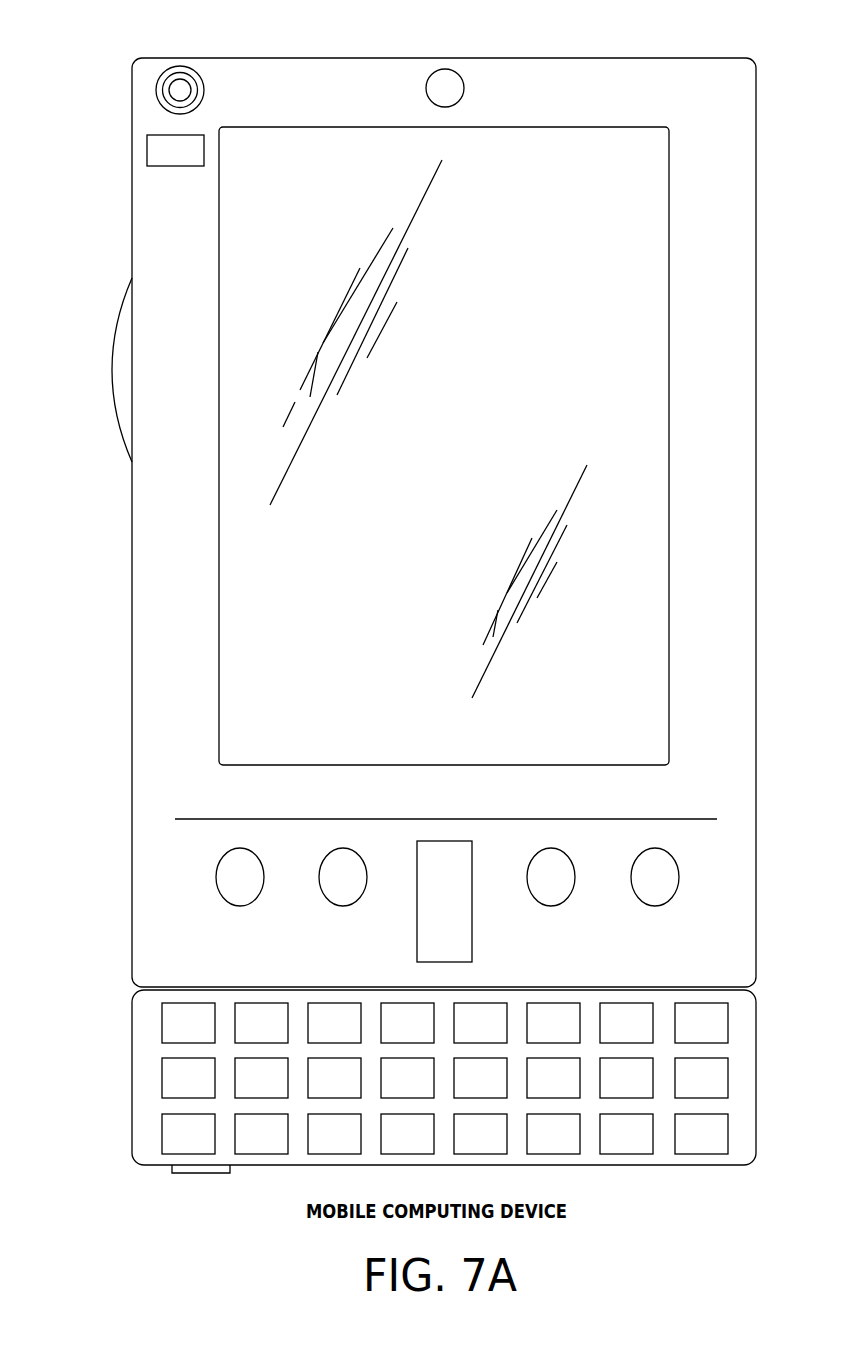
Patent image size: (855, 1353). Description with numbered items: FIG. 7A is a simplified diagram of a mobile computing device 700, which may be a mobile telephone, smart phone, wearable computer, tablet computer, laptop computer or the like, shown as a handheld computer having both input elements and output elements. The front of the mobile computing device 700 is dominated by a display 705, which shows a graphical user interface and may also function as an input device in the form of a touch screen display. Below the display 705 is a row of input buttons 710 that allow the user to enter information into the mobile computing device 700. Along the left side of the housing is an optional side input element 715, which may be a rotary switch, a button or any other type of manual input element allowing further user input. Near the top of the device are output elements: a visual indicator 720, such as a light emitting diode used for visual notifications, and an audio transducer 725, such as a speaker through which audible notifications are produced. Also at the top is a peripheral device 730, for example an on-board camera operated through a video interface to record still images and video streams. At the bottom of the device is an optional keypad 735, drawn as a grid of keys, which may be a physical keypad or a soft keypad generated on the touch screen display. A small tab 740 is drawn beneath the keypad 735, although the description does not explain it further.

The mobile computing device 700 is at (720, 58).
The display 705 is at (241, 610).
The input buttons 710 is at (240, 906).
The side input element 715 is at (112, 372).
The visual indicator 720 is at (147, 152).
The audio transducer 725 is at (156, 97).
The peripheral device 730 is at (443, 68).
The keypad 735 is at (145, 1078).
The slide tab 740 is at (180, 1175).